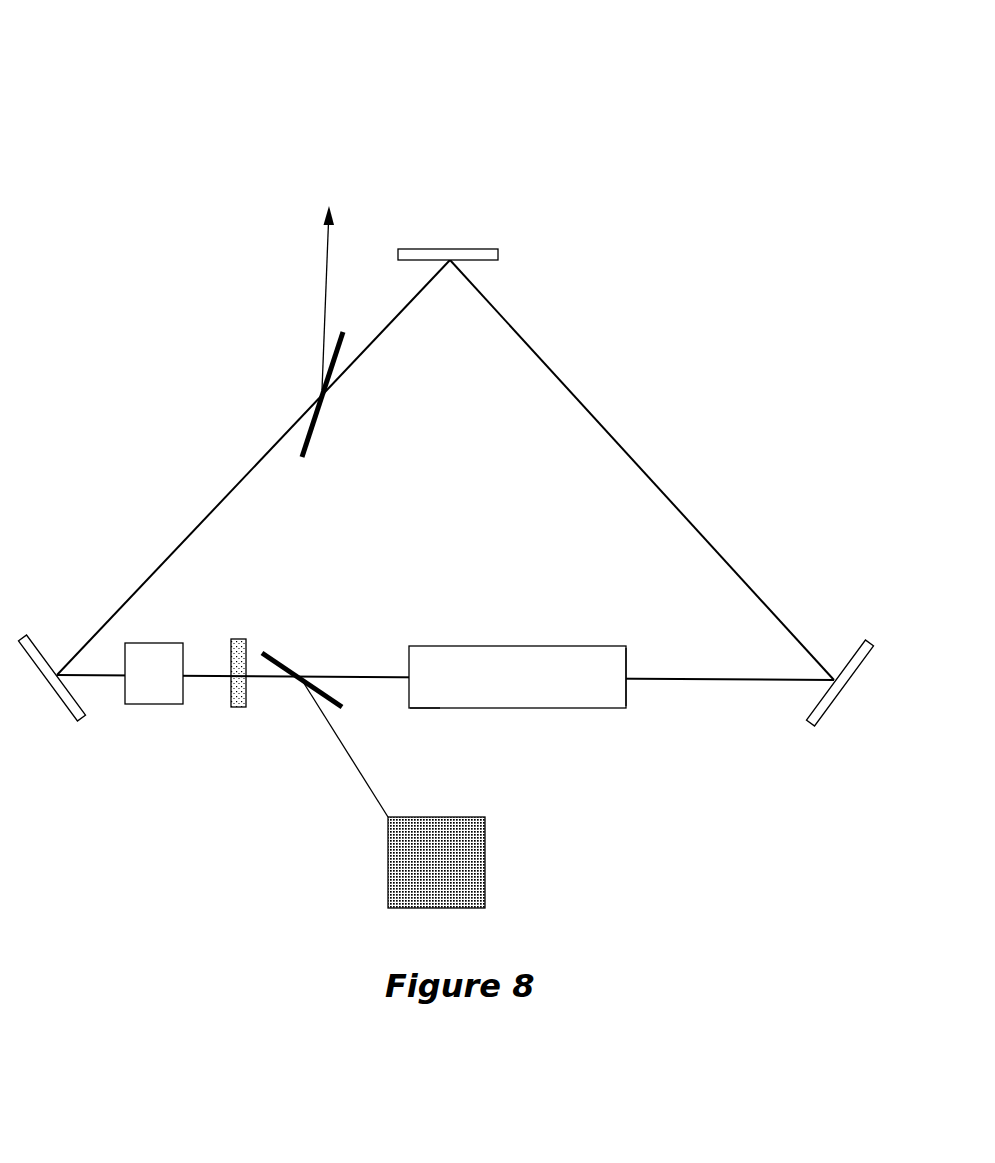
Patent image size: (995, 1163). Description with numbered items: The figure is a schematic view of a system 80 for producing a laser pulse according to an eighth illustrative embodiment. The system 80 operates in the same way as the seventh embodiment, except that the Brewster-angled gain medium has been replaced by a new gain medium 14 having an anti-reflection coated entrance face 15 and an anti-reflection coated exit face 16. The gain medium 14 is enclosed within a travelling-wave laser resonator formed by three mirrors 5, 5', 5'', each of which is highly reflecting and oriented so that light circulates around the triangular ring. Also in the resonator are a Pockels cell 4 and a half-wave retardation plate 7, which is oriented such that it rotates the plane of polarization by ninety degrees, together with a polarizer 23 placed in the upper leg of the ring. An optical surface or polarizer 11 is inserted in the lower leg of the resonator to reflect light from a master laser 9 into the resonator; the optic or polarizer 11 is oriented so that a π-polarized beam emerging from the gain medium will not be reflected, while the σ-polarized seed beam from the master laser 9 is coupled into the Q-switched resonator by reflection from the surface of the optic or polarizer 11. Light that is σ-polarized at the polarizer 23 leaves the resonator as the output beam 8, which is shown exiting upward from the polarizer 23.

The system 80 is at (241, 124).
The mirror 5 is at (51, 627).
The mirror 5' is at (833, 615).
The mirror 5'' is at (422, 212).
The Pockels cell 4 is at (118, 693).
The half-wave retardation plate 7 is at (239, 638).
The optical surface or polarizer 11 is at (282, 660).
The gain medium 14 is at (506, 646).
The entrance face 15 is at (625, 667).
The exit face 16 is at (405, 703).
The master laser 9 is at (485, 857).
The output beam 8 is at (327, 233).
The polarizer 23 is at (320, 423).